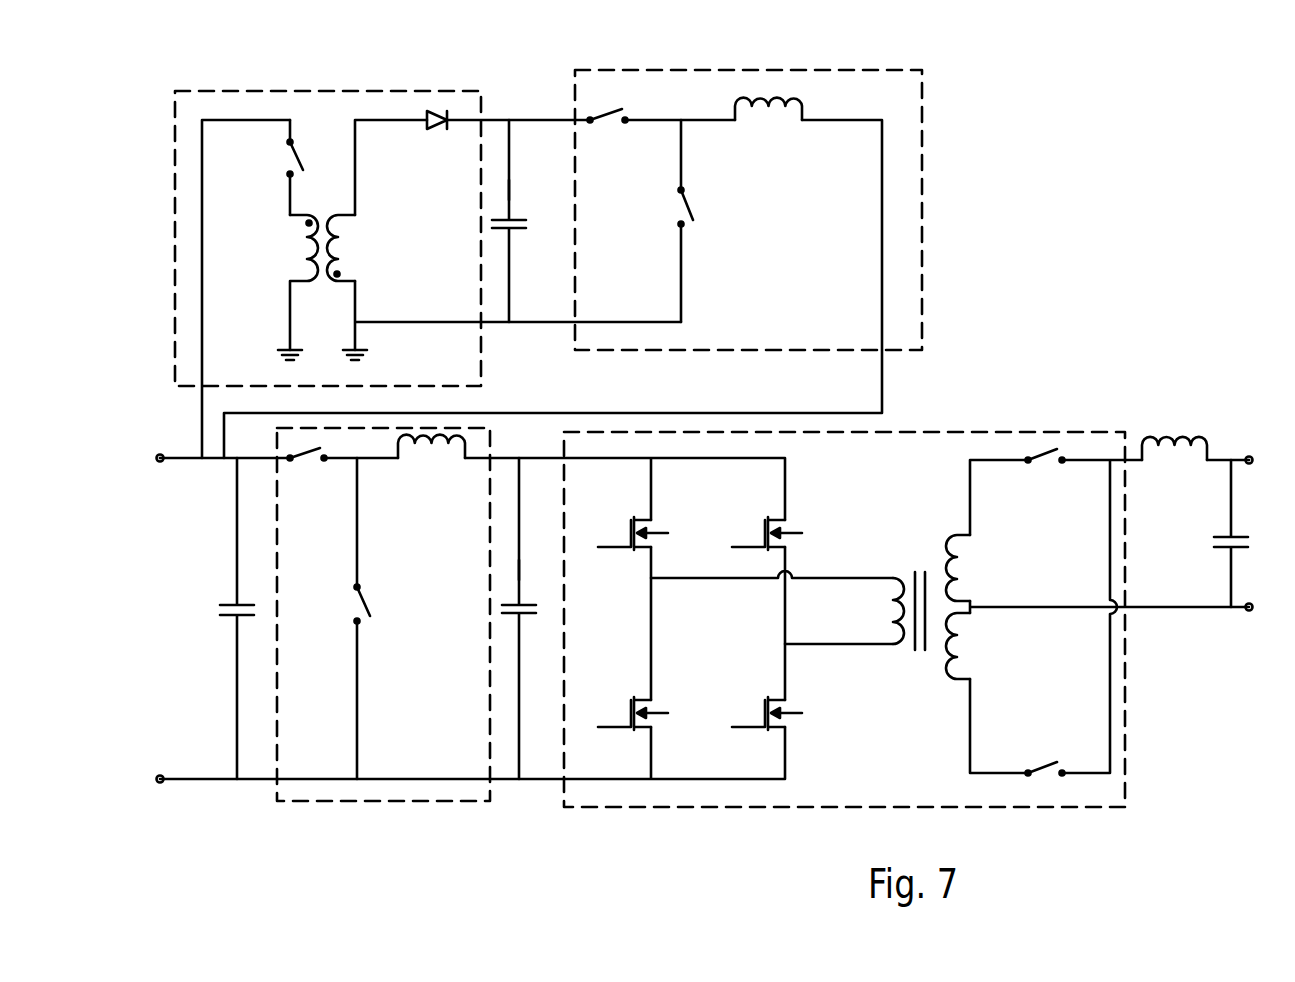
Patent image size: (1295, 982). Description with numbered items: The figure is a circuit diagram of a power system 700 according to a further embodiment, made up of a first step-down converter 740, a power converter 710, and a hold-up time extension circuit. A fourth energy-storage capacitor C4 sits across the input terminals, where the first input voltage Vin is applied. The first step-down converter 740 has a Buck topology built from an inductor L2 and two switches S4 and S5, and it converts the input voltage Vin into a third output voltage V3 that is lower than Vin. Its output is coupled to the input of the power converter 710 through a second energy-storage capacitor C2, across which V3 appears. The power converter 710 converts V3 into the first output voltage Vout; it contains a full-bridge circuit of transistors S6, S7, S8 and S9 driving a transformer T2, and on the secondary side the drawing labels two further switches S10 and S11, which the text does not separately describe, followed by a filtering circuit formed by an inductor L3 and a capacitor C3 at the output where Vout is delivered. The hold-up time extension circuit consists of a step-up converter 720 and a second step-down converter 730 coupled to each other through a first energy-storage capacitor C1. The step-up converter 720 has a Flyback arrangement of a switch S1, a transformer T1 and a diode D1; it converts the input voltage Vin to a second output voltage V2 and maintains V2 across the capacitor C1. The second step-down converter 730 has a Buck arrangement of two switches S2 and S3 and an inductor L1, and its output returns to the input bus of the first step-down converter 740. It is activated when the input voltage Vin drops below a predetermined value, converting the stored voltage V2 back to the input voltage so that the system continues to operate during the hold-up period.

The power system 700 is at (1121, 167).
The power converter 710 is at (940, 432).
The step-up converter 720 is at (441, 90).
The second step-down converter 730 is at (878, 69).
The first step-down converter 740 is at (316, 801).
The switch S1 is at (275, 167).
The transformer T1 is at (338, 282).
The diode D1 is at (433, 141).
The first energy-storage capacitor C1 is at (518, 221).
The second output voltage V2 is at (526, 201).
The switch S2 is at (608, 134).
The switch S3 is at (702, 221).
The inductor L1 is at (768, 128).
The switch S4 is at (307, 477).
The switch S5 is at (381, 618).
The inductor L2 is at (431, 470).
The fourth energy-storage capacitor C4 is at (228, 618).
The first input voltage Vin is at (144, 542).
The second energy-storage capacitor C2 is at (528, 618).
The third output voltage V3 is at (535, 581).
The transistor S6 is at (630, 530).
The transistor S7 is at (765, 532).
The switch S8 is at (627, 713).
The switch S9 is at (765, 712).
The transformer T2 is at (931, 607).
The switch S10 is at (1046, 474).
The switch S11 is at (1050, 779).
The inductor L3 is at (1174, 464).
The capacitor C3 is at (1212, 533).
The first output voltage Vout is at (1254, 487).